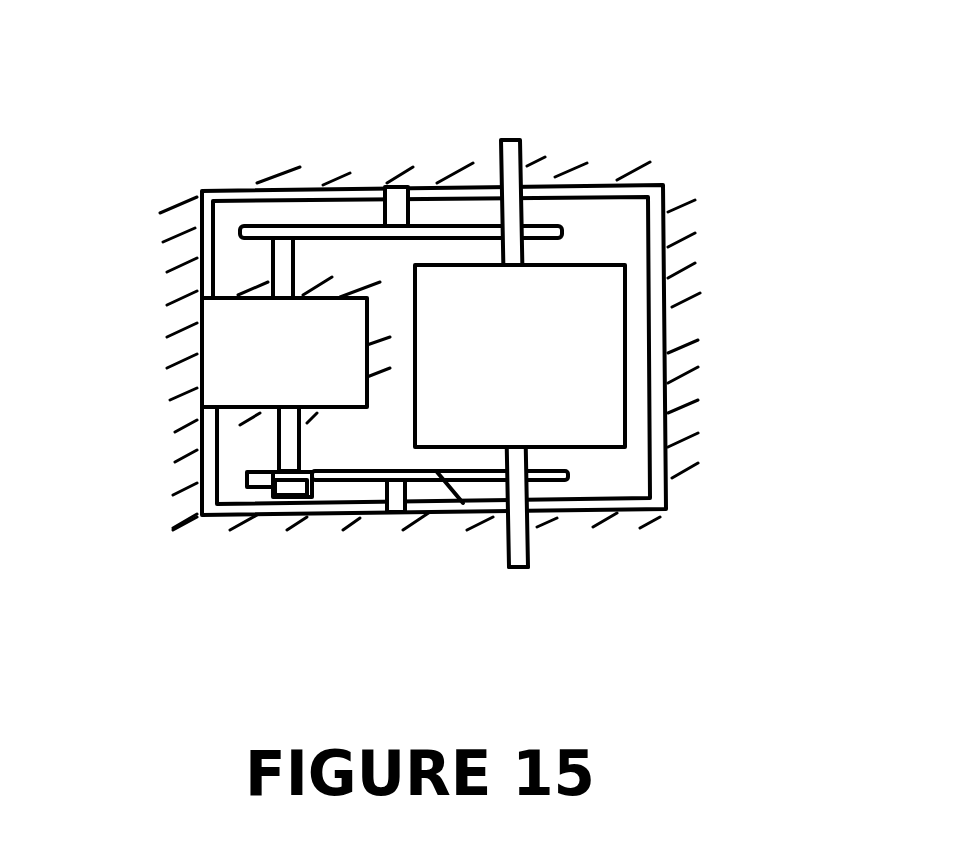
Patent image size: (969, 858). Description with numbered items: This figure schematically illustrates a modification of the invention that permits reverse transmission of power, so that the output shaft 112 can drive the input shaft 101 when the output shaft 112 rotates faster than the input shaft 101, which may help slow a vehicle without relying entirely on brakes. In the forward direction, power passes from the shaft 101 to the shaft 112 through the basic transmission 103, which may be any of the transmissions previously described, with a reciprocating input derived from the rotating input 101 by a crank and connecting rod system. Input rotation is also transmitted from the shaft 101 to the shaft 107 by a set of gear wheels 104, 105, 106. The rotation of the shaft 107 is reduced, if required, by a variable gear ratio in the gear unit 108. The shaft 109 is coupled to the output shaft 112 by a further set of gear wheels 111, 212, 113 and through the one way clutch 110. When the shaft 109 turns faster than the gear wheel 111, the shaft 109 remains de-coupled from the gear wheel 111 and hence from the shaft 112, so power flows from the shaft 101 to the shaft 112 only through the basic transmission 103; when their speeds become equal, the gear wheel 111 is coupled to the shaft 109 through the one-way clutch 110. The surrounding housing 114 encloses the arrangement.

The input shaft 101 is at (506, 141).
The basic transmission 103 is at (593, 350).
The gear wheel 104 is at (562, 220).
The gear wheel 105 is at (363, 228).
The gear wheel 106 is at (283, 227).
The shaft 107 is at (273, 266).
The gear unit 108 is at (267, 358).
The shaft 109 is at (280, 438).
The one way clutch 110 is at (257, 514).
The gear wheel 111 is at (332, 485).
The output shaft 112 is at (530, 550).
The gear wheel 113 is at (570, 468).
The housing 114 is at (664, 185).
The gear wheel 212 is at (437, 474).